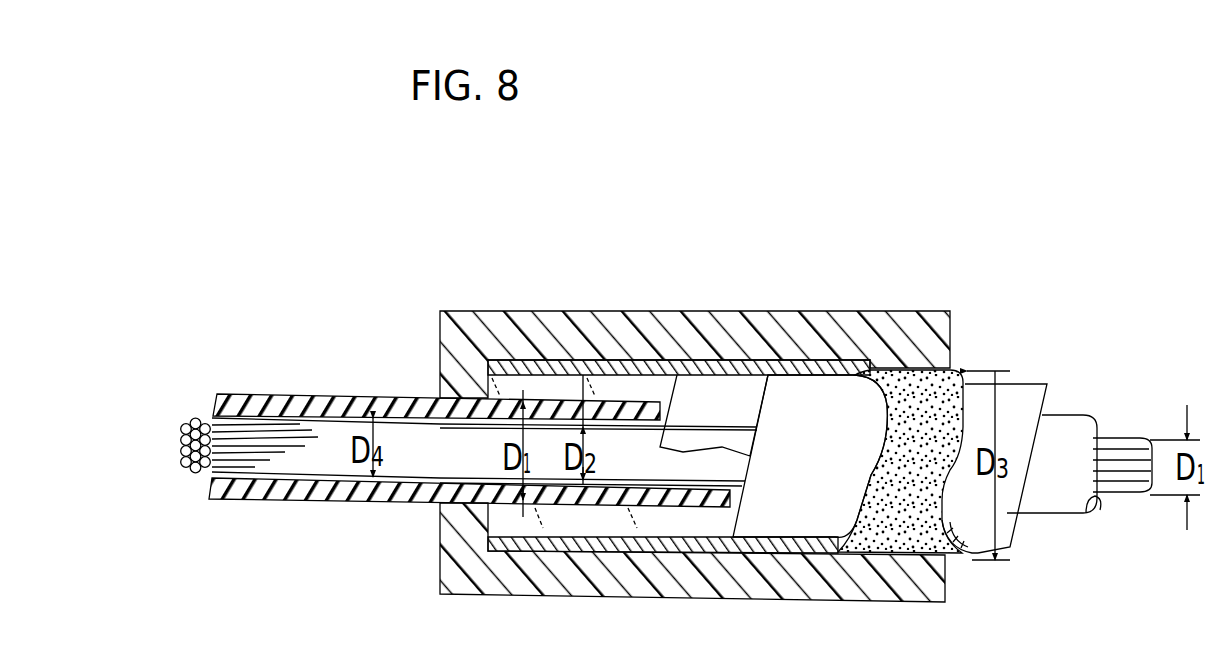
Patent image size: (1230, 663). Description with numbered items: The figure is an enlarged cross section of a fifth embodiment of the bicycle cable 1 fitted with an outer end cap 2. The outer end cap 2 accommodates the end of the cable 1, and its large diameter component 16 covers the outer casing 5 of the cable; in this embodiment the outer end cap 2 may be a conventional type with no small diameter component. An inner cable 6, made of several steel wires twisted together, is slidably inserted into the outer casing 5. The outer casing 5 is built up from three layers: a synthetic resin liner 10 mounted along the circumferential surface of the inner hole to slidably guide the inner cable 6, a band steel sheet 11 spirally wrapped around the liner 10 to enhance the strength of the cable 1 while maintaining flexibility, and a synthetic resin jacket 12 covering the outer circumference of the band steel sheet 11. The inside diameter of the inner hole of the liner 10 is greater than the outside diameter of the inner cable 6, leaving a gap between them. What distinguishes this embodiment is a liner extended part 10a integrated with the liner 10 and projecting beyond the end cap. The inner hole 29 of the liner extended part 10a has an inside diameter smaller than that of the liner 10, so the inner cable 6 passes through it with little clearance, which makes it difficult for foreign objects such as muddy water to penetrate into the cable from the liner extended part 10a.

The bicycle cable 1 is at (1024, 381).
The outer end cap 2 is at (857, 311).
The outer casing 5 is at (1012, 549).
The inner cable 6 is at (1112, 445).
The liner 10 is at (673, 515).
The liner extended part 10a is at (303, 495).
The band steel sheet 11 is at (775, 528).
The jacket 12 is at (838, 556).
The large diameter component 16 is at (617, 330).
The inner hole 29 is at (288, 432).